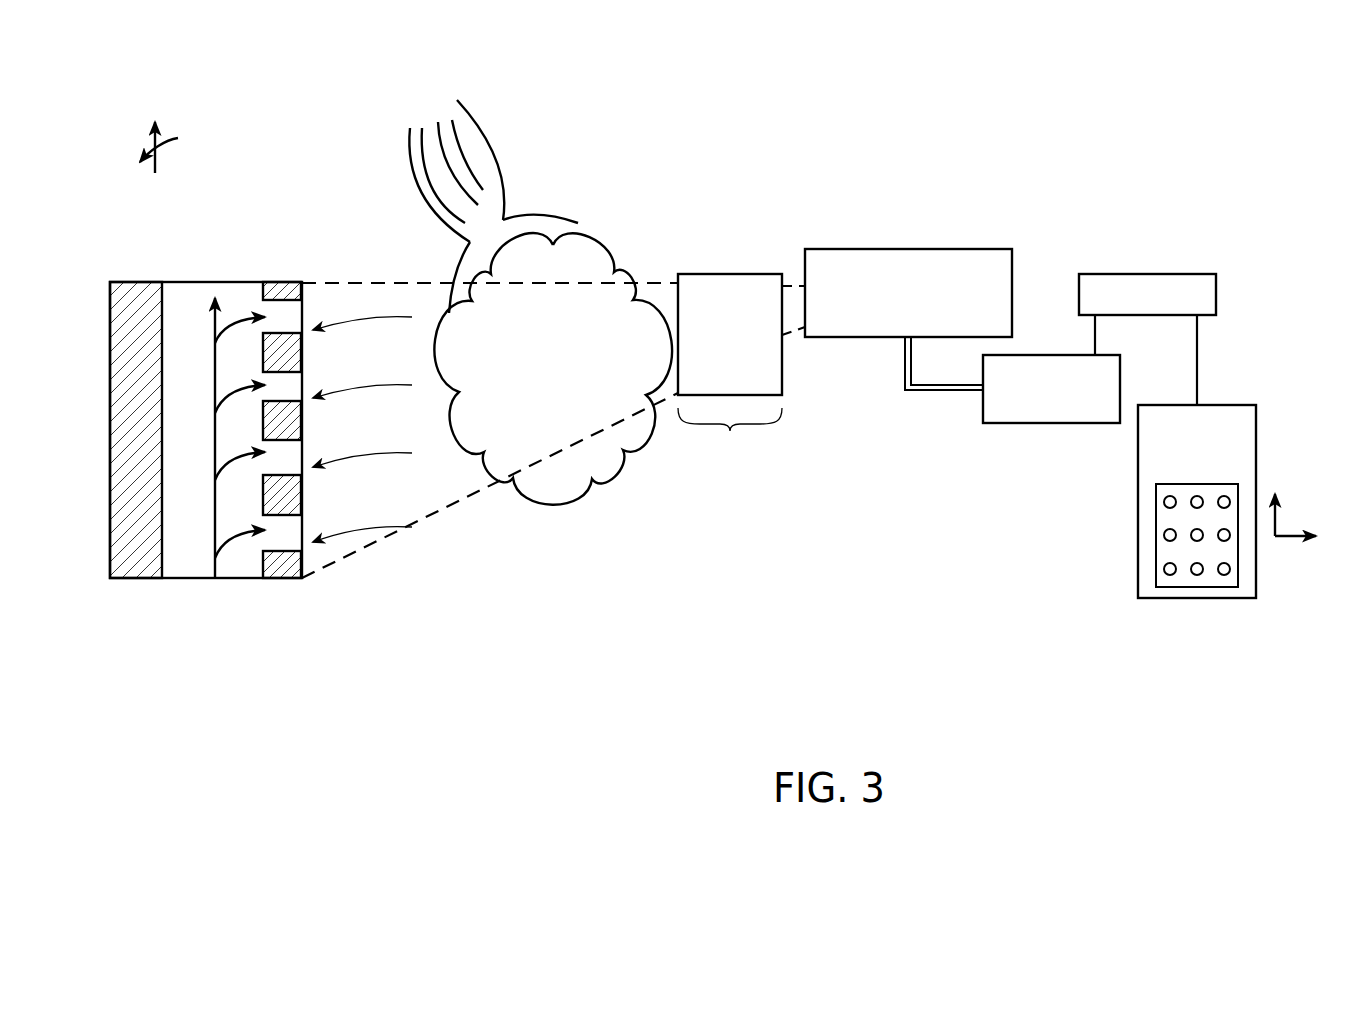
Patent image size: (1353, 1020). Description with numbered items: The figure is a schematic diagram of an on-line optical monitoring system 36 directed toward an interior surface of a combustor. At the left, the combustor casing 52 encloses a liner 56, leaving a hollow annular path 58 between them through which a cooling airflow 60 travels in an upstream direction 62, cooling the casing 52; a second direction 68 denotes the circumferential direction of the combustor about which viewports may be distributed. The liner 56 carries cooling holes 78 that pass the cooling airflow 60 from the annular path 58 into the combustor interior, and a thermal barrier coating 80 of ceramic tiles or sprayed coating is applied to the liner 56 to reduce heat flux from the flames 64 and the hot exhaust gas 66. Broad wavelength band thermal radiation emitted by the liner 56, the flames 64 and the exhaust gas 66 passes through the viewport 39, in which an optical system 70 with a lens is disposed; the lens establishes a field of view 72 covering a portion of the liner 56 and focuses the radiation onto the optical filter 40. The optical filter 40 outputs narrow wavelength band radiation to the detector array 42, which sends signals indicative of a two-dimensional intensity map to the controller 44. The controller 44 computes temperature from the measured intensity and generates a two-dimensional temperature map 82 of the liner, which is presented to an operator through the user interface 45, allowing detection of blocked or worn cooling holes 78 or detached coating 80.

The optical monitoring system 36 is at (1012, 157).
The viewport 39 is at (730, 438).
The optical filter 40 is at (908, 248).
The detector array 42 is at (1052, 424).
The controller 44 is at (1148, 272).
The user interface 45 is at (1256, 427).
The combustor casing 52 is at (130, 288).
The combustor liner 56 is at (302, 288).
The hollow annular path 58 is at (188, 557).
The cooling airflow 60 is at (213, 332).
The upstream direction 62 is at (157, 157).
The flames 64 is at (488, 160).
The exhaust gas 66 is at (583, 482).
The circumferential direction 68 is at (146, 138).
The optical system 70 is at (730, 272).
The field of view 72 is at (392, 278).
The cooling holes 78 is at (377, 424).
The thermal barrier coating 80 is at (302, 352).
The two-dimensional temperature map 82 is at (1156, 570).